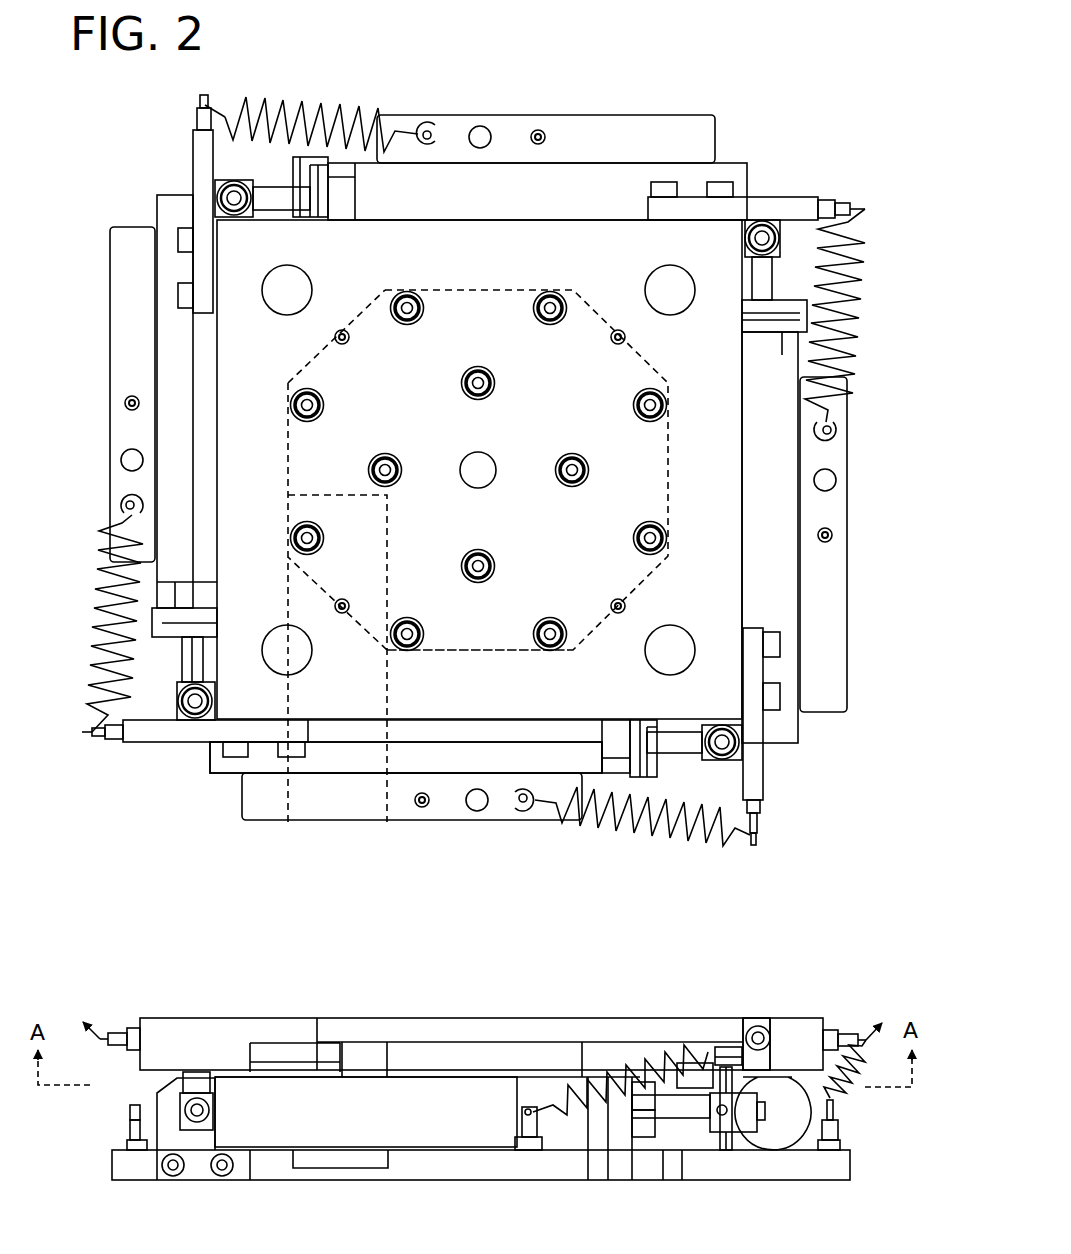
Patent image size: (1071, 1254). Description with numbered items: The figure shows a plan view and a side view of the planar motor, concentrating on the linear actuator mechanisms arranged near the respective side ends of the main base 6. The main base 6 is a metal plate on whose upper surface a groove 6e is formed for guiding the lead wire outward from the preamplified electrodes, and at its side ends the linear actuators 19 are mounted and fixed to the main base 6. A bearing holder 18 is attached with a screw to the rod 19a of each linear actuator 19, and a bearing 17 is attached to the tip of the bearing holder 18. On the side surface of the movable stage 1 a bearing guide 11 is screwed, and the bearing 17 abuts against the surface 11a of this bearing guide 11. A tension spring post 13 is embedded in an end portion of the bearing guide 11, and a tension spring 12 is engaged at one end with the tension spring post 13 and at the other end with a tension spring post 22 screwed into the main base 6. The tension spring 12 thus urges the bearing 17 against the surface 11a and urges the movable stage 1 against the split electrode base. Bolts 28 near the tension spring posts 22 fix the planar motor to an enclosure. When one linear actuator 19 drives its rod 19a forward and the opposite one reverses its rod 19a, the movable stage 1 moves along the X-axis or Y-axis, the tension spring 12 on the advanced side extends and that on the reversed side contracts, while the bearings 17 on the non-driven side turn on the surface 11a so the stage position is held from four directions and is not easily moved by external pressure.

The movable stage 1 is at (600, 228).
The main base 6 is at (277, 1172).
The groove 6e is at (355, 1162).
The bearing guide 11 is at (177, 741).
The surface of the bearing guide 11a is at (212, 180).
The tension spring 12 is at (688, 833).
The tension spring post 13 is at (762, 828).
The bearing 17 is at (728, 743).
The bearing holder 18 is at (730, 1122).
The linear actuator 19 is at (452, 763).
The rod 19a is at (682, 1117).
The tension spring post 22 is at (523, 805).
The bolts 28 is at (481, 126).